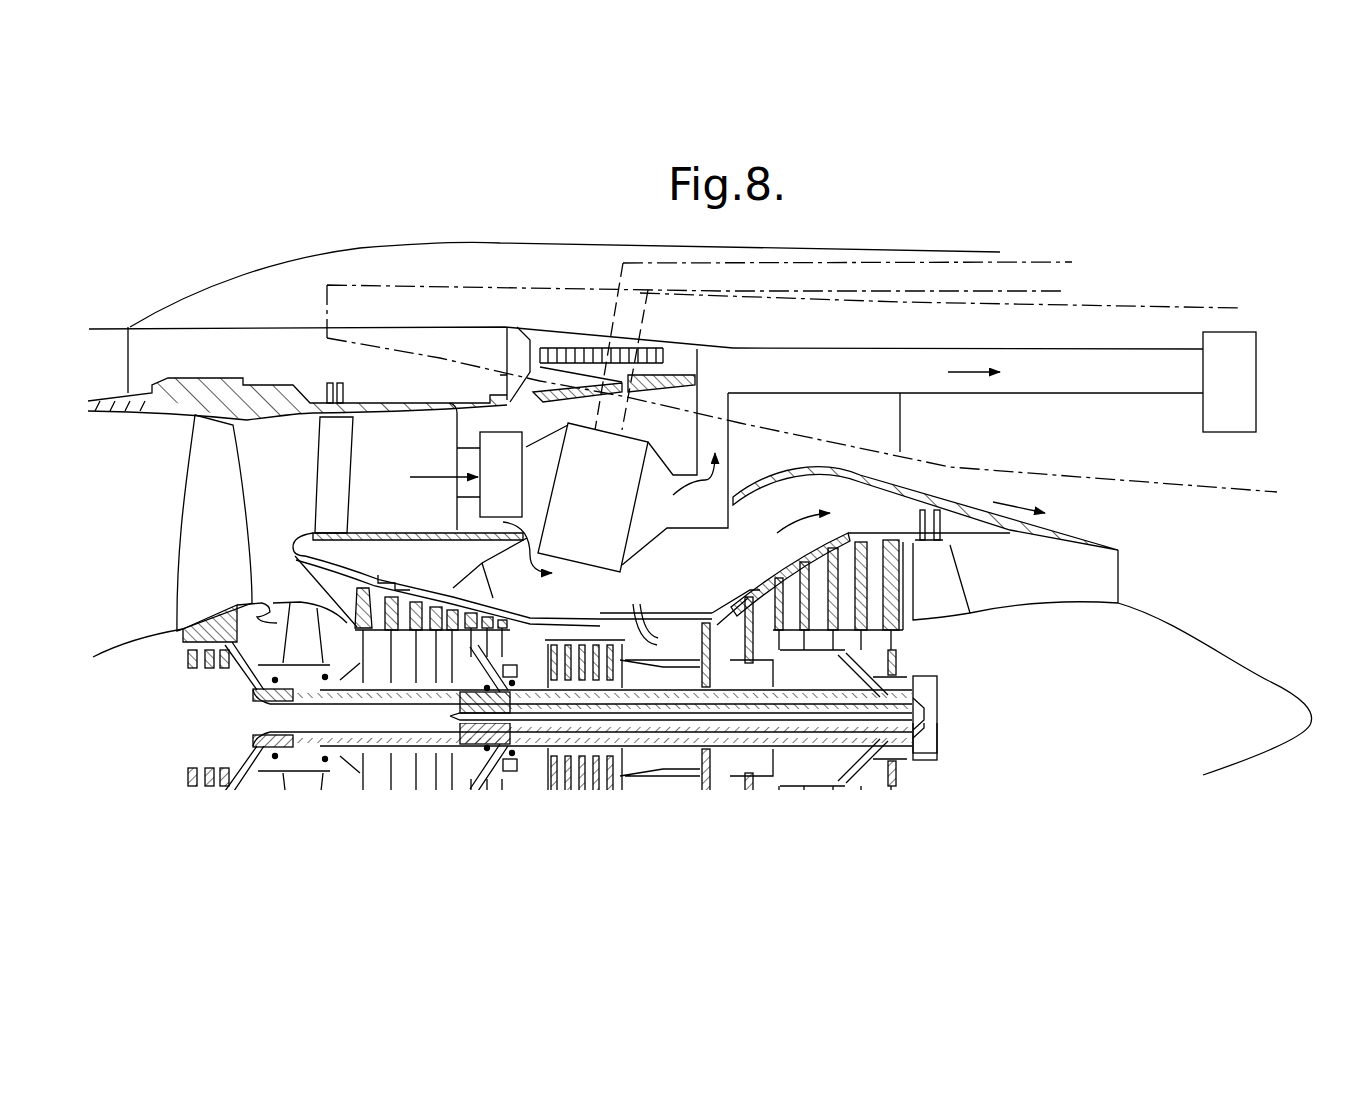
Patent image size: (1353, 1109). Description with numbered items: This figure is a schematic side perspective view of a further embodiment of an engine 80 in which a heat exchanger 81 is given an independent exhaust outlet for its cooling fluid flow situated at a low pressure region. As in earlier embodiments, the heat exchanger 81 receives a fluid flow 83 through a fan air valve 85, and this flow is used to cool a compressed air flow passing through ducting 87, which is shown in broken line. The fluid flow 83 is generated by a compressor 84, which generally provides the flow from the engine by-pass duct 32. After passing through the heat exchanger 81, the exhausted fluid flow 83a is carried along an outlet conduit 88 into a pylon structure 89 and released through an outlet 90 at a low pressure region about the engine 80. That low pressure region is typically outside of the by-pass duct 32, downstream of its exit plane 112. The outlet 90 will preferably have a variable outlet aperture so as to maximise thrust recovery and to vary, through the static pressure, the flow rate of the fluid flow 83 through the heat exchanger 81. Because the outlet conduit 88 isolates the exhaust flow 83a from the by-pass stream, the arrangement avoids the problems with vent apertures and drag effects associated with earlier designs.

The engine 80 is at (988, 743).
The heat exchanger 81 is at (607, 519).
The fluid flow 83 is at (430, 473).
The exhausted fluid flow 83a is at (707, 497).
The compressor 84 is at (217, 478).
The fan air valve 85 is at (517, 494).
The ducting 87 is at (585, 590).
The outlet conduit 88 is at (1052, 378).
The pylon structure 89 is at (1148, 302).
The outlet 90 is at (1245, 348).
The exit plane 112 is at (905, 423).
The by-pass duct 32 is at (783, 468).